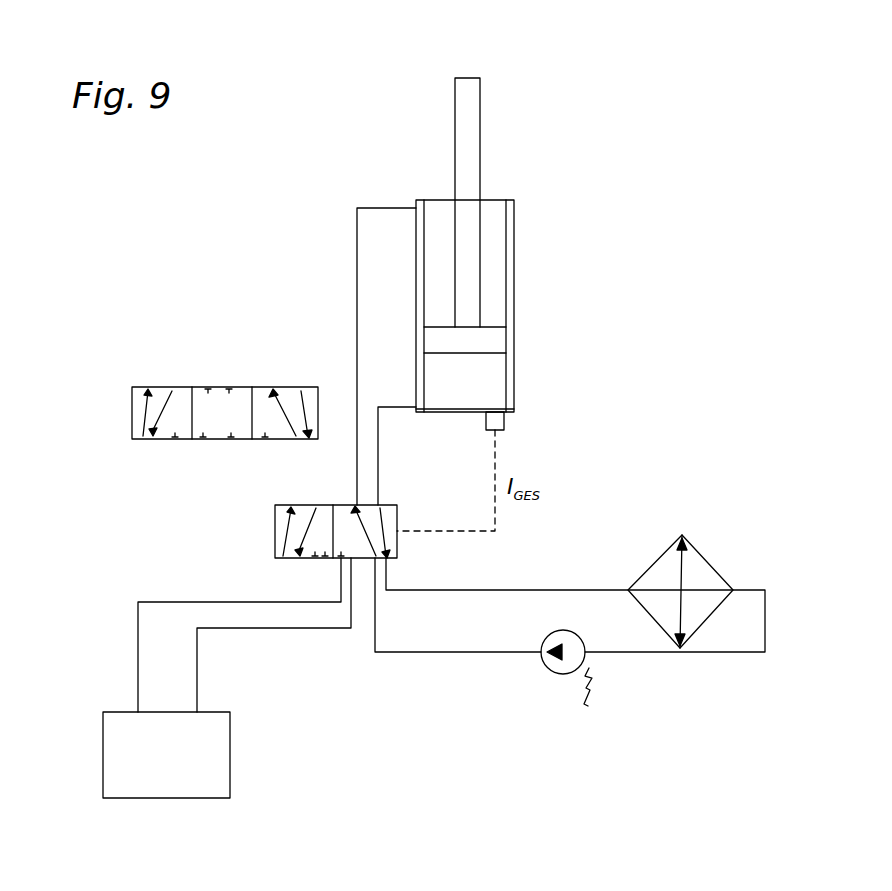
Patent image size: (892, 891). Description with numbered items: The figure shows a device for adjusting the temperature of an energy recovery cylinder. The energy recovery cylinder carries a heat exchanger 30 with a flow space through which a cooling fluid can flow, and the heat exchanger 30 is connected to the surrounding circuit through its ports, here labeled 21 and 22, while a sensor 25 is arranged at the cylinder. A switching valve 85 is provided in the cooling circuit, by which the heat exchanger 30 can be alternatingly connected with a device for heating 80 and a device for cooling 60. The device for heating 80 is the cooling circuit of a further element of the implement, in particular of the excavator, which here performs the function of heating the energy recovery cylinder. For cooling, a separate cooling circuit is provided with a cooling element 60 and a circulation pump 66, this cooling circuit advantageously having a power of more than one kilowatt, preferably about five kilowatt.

The piston rod 21 is at (411, 198).
The hydraulic line 22 is at (403, 397).
The sensor 25 is at (509, 428).
The heat exchanger 30 is at (516, 229).
The device for cooling 60 is at (718, 562).
The circulation pump 66 is at (552, 685).
The device for heating 80 is at (112, 413).
The switching valve 85 is at (260, 531).